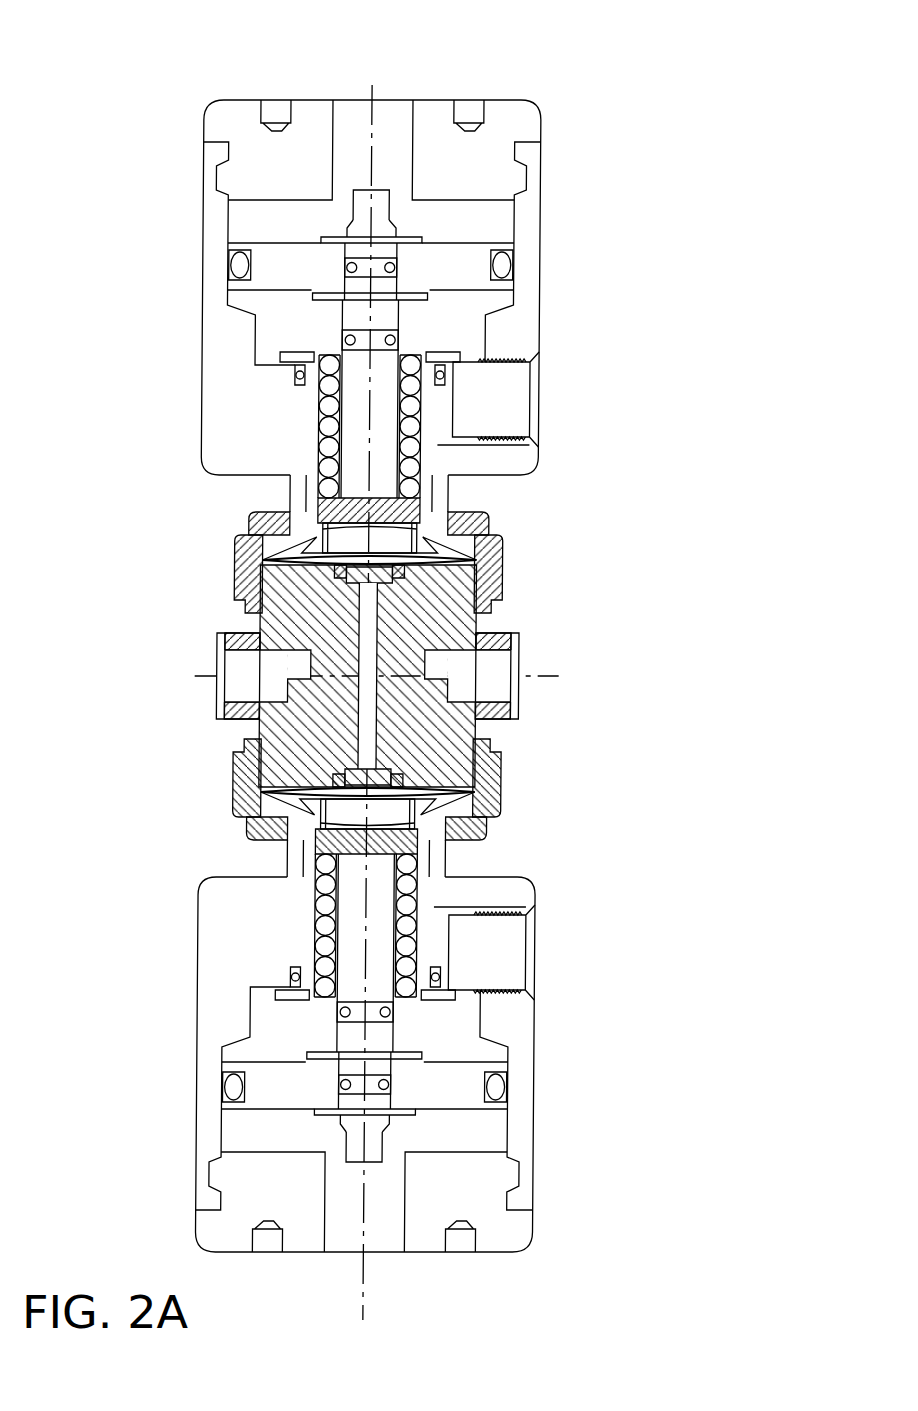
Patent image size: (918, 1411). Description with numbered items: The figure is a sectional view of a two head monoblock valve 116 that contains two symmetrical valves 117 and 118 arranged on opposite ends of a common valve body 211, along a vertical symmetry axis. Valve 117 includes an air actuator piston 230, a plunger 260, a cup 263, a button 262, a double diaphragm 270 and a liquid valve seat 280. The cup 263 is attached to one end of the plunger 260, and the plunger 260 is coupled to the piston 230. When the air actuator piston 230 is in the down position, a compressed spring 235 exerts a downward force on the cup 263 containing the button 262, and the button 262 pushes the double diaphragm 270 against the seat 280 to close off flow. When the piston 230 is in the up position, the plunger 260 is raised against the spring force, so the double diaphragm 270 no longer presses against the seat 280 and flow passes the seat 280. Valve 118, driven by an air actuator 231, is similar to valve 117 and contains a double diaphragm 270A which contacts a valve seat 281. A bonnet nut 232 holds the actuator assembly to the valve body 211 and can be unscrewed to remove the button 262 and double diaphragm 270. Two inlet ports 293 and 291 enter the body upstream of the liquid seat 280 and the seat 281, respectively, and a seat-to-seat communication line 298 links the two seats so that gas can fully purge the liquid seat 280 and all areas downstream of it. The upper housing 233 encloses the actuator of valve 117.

The two head monoblock valve 116 is at (205, 64).
The valve 117 is at (682, 367).
The valve 118 is at (682, 1071).
The valve body 211 is at (512, 721).
The air actuator piston 230 is at (391, 210).
The air actuator 231 is at (541, 1080).
The bonnet nut 232 is at (248, 520).
The upper actuator housing 233 is at (204, 323).
The compressed spring 235 is at (380, 437).
The plunger 260 is at (412, 408).
The button 262 is at (391, 543).
The cup 263 is at (426, 508).
The double diaphragm 270 is at (303, 553).
The double diaphragm 270A is at (256, 834).
The liquid valve seat 280 is at (324, 563).
The valve seat 281 is at (460, 795).
The inlet port 291 is at (509, 665).
The inlet port 293 is at (220, 685).
The seat-to-seat communication line 298 is at (384, 622).